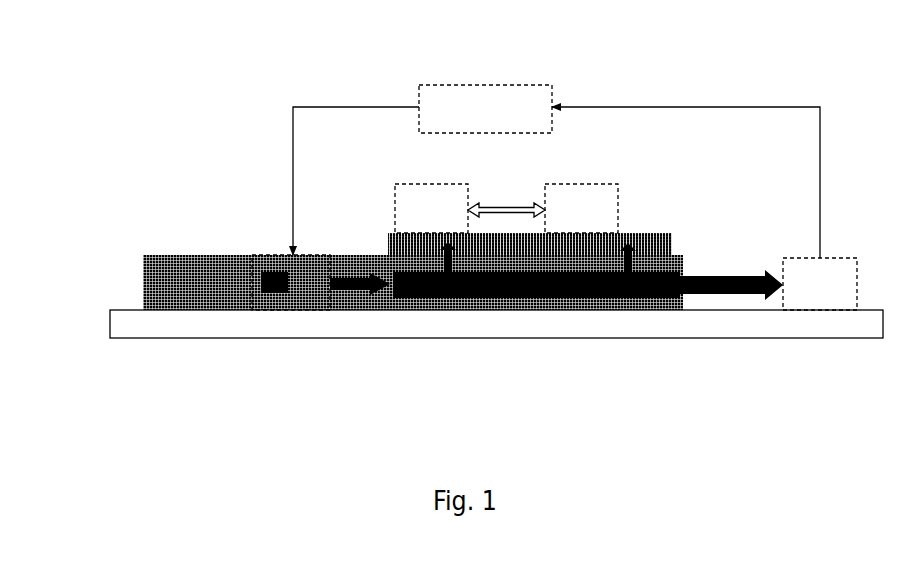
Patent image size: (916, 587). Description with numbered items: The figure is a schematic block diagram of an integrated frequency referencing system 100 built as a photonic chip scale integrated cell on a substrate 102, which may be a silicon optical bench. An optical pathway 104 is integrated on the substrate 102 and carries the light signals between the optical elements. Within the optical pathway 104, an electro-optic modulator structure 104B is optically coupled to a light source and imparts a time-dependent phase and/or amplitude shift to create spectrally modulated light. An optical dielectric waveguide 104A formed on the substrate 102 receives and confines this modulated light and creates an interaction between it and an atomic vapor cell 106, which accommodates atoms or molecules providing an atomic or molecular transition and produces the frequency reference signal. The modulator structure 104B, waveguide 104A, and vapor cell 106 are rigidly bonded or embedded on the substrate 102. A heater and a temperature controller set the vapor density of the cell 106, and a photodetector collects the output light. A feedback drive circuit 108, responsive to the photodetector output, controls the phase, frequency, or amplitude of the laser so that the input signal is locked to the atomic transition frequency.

The integrated frequency referencing system 100 is at (293, 95).
The substrate 102 is at (459, 338).
The optical pathway 104 is at (185, 272).
The optical dielectric waveguide 104A is at (598, 291).
The electro-optic modulator structure 104B is at (275, 298).
The atomic vapor cell 106 is at (667, 232).
The feedback drive circuit 108 is at (575, 197).